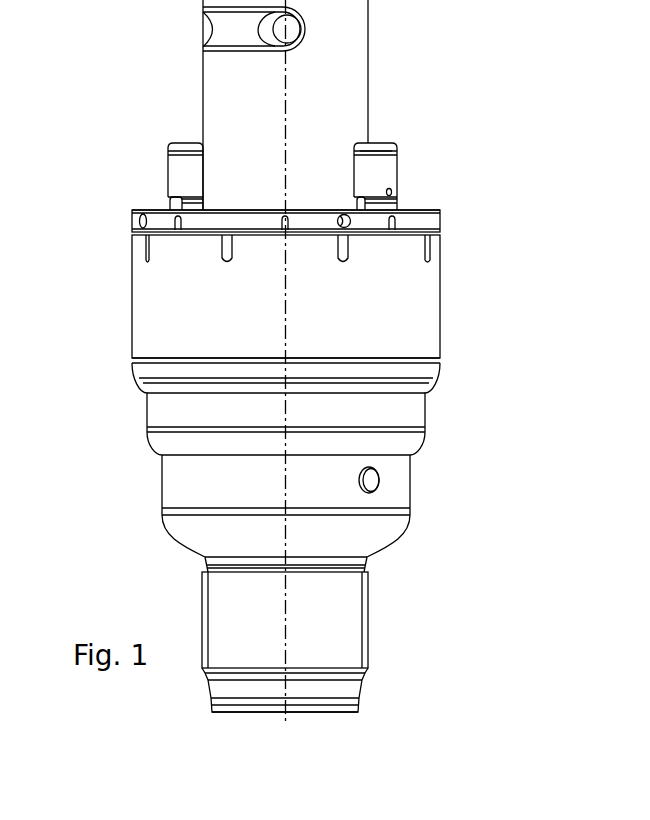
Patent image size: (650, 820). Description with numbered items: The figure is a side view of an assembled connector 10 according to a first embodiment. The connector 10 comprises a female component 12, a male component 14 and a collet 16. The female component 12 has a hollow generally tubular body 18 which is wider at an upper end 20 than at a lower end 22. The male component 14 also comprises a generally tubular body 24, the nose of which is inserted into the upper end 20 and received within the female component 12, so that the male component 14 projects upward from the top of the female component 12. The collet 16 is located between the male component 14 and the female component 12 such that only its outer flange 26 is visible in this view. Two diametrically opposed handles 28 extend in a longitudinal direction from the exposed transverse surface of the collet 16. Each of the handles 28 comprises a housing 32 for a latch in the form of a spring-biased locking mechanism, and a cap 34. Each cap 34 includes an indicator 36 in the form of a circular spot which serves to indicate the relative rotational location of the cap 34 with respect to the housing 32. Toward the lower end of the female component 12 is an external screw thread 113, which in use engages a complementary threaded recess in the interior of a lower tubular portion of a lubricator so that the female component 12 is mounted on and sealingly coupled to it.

The connector 10 is at (470, 602).
The female component 12 is at (366, 409).
The male component 14 is at (221, 91).
The collet 16 is at (422, 218).
The hollow generally tubular body 18 is at (226, 535).
The upper end 20 is at (147, 208).
The lower end 22 is at (248, 716).
The generally tubular body 24 is at (340, 82).
The outer flange 26 is at (207, 226).
The handles 28 is at (168, 174).
The housing 32 is at (173, 203).
The cap 34 is at (186, 167).
The indicator 36 is at (387, 163).
The external screw thread 113 is at (368, 620).